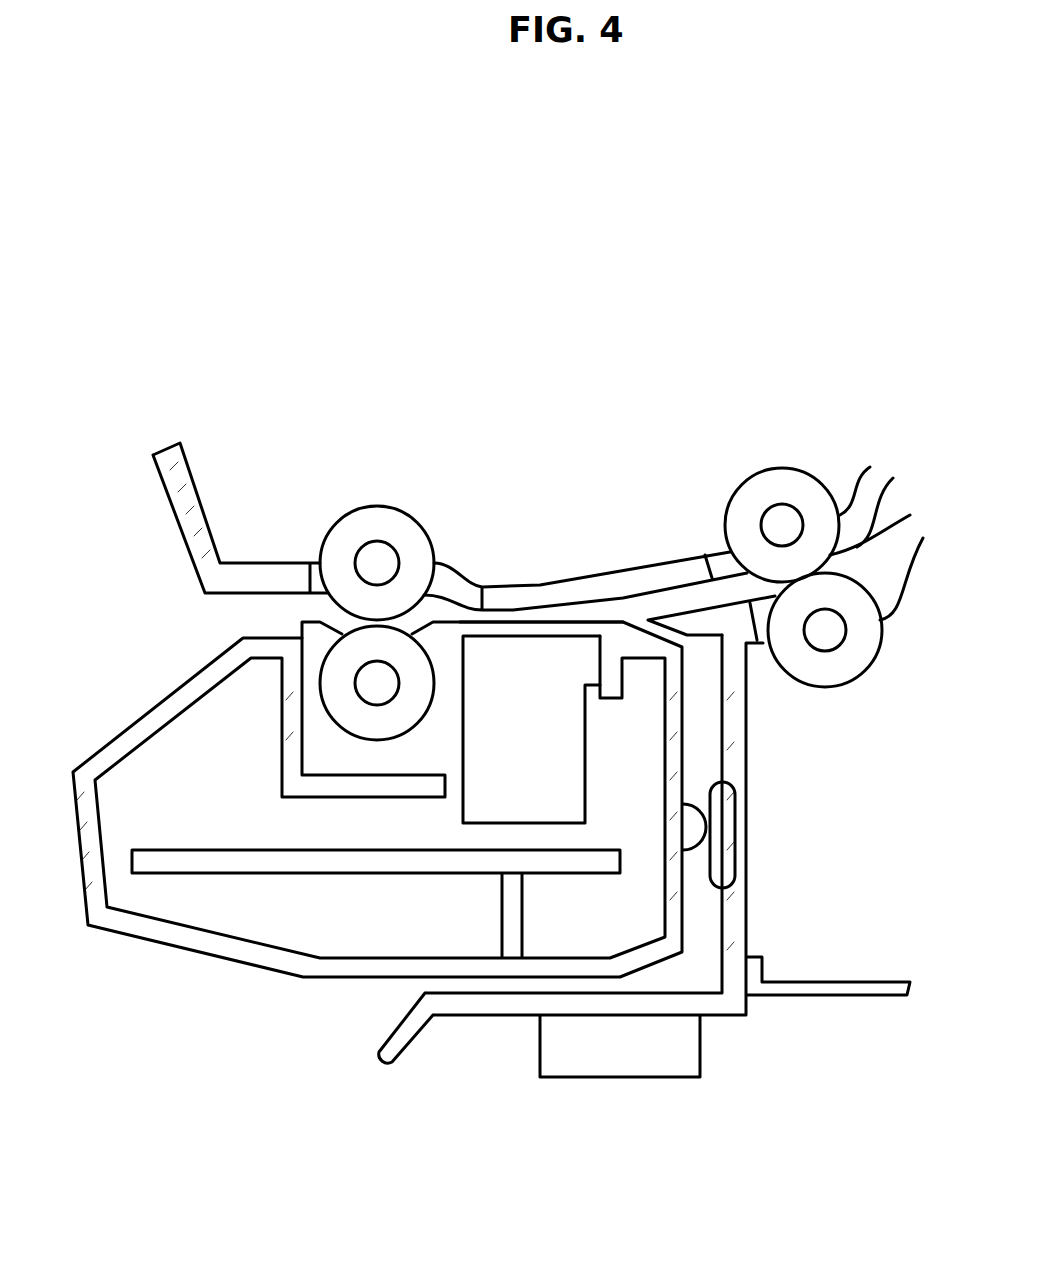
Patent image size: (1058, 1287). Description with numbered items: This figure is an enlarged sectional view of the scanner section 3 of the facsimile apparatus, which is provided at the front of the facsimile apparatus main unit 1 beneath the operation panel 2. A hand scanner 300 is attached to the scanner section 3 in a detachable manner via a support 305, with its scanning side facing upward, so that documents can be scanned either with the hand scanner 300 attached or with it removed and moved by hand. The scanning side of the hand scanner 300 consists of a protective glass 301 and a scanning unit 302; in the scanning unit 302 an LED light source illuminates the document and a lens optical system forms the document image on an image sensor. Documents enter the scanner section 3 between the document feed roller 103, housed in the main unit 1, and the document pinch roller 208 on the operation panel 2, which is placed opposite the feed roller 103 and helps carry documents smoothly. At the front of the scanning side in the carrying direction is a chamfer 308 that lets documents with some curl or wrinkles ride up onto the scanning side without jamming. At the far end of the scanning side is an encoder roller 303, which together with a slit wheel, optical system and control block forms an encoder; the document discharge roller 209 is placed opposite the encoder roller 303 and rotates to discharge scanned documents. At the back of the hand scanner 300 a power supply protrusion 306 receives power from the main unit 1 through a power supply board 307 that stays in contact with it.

The facsimile apparatus main unit 1 is at (827, 1008).
The operation panel 2 is at (122, 470).
The scanner section 3 is at (371, 867).
The document feed roller 103 is at (852, 684).
The document pinch roller 208 is at (787, 467).
The document discharge roller 209 is at (400, 510).
The hand scanner 300 is at (90, 773).
The protective glass 301 is at (472, 630).
The scanning unit 302 is at (572, 712).
The encoder roller 303 is at (340, 628).
The support 305 is at (150, 860).
The power supply protrusion 306 is at (693, 845).
The power supply board 307 is at (725, 863).
The chamfer 308 is at (647, 622).